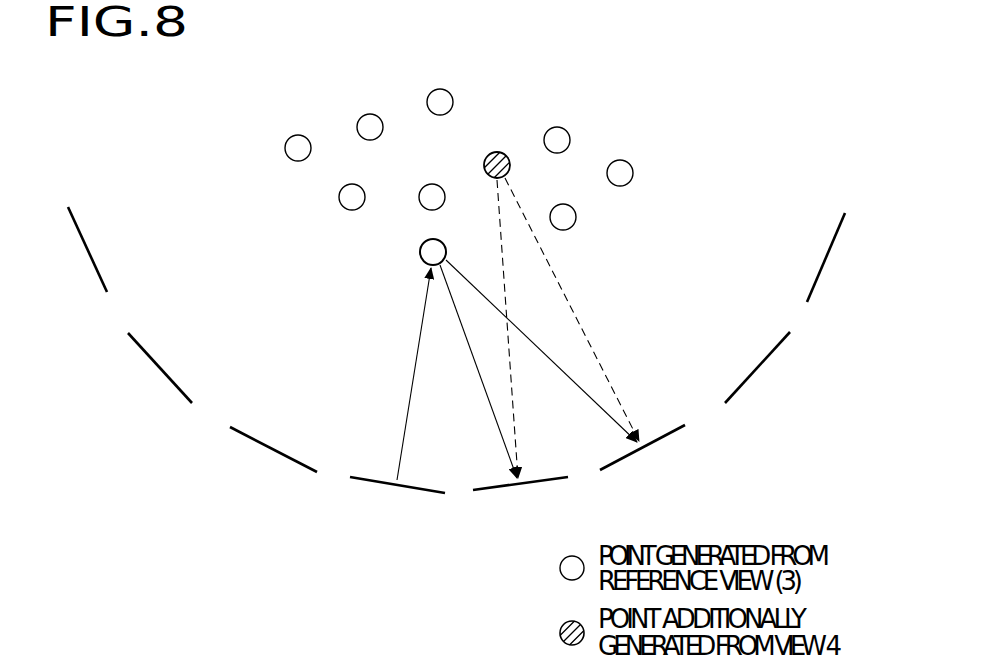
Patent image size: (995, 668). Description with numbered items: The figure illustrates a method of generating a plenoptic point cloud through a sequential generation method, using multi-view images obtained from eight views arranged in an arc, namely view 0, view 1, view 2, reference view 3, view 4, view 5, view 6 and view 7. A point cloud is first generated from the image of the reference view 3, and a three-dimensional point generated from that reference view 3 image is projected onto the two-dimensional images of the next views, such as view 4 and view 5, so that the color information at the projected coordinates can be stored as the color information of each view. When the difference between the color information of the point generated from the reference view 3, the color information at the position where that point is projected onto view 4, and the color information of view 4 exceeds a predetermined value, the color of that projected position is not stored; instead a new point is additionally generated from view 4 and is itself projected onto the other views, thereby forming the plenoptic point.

The view 0 is at (83, 249).
The view 1 is at (160, 368).
The view 2 is at (273, 458).
The reference view 3 is at (397, 501).
The view 4 is at (520, 501).
The view 5 is at (642, 454).
The view 6 is at (757, 367).
The view 7 is at (830, 257).